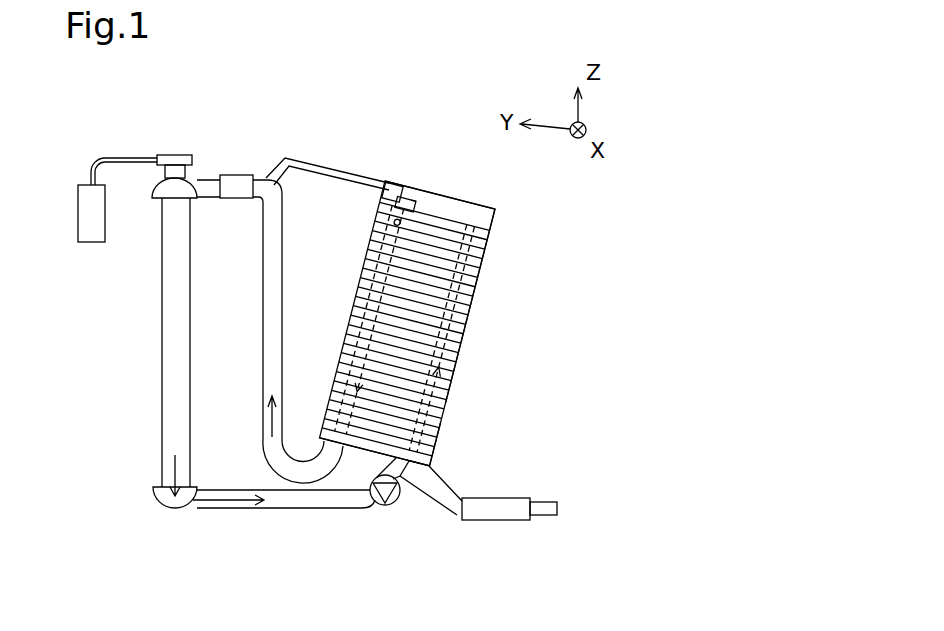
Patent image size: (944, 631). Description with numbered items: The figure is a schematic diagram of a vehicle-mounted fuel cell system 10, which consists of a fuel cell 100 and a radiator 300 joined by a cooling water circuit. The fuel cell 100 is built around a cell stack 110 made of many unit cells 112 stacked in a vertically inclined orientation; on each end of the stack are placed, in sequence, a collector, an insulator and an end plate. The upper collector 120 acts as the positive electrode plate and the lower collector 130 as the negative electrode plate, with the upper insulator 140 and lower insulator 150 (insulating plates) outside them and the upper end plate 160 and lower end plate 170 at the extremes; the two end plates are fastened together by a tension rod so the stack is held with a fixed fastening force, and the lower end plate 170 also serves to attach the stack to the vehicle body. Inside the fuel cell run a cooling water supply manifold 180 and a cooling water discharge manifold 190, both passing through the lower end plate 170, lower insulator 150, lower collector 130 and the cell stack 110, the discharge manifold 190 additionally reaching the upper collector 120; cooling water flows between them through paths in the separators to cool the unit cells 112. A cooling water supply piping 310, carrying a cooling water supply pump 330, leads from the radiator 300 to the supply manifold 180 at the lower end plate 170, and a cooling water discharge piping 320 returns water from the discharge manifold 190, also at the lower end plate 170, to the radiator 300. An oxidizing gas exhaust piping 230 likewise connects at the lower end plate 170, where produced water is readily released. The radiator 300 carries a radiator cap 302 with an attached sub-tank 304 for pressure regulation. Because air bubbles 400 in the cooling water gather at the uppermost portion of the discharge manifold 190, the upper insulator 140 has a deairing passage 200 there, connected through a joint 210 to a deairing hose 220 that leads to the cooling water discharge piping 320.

The fuel cell system 10 is at (207, 106).
The fuel cell 100 is at (601, 187).
The cell stack 110 is at (465, 362).
The unit cells 112 is at (472, 312).
The collector 120 is at (486, 250).
The collector 130 is at (437, 433).
The insulator 140 is at (492, 223).
The insulator 150 is at (432, 452).
The end plate 160 is at (497, 210).
The end plate 170 is at (427, 468).
The cooling water supply manifold 180 is at (482, 278).
The cooling water discharge manifold 190 is at (375, 240).
The deairing passage 200 is at (412, 195).
The joint 210 is at (400, 197).
The deairing hose 220 is at (303, 162).
The oxidizing gas exhaust piping 230 is at (455, 518).
The radiator 300 is at (162, 293).
The radiator cap 302 is at (195, 156).
The sub-tank 304 is at (78, 205).
The cooling water supply piping 310 is at (270, 508).
The cooling water discharge piping 320 is at (263, 430).
The cooling water supply pump 330 is at (388, 505).
The air bubbles 400 is at (386, 188).